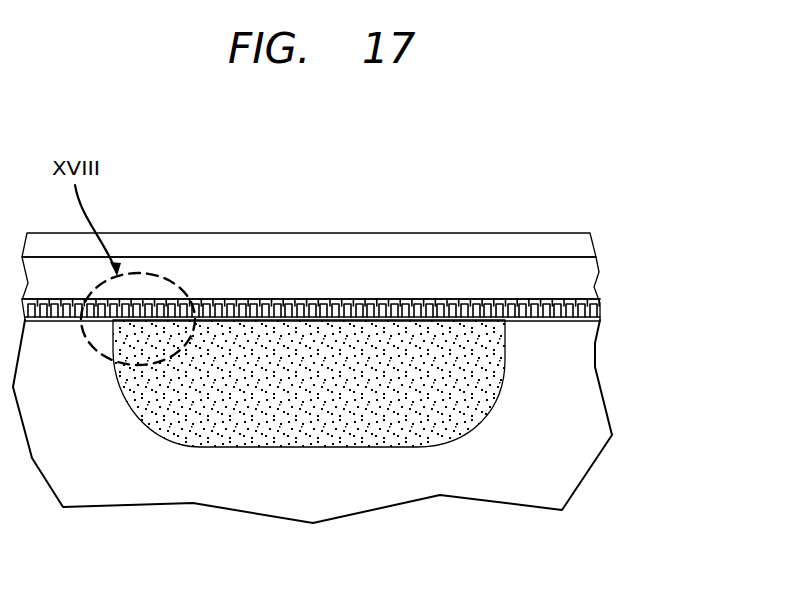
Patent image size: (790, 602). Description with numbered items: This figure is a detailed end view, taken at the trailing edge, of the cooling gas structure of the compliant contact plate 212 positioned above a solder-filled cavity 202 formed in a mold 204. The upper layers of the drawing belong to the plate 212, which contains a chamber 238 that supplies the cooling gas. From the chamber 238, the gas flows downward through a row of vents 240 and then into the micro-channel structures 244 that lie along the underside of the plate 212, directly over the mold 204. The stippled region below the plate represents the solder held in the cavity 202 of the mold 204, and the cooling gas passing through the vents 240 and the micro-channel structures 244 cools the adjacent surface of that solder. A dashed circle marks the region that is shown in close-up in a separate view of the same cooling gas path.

The cavity 202 is at (380, 447).
The mold 204 is at (552, 459).
The plate 212 is at (591, 233).
The chamber 238 is at (515, 288).
The vents 240 is at (315, 298).
The micro-channel structures 244 is at (592, 317).